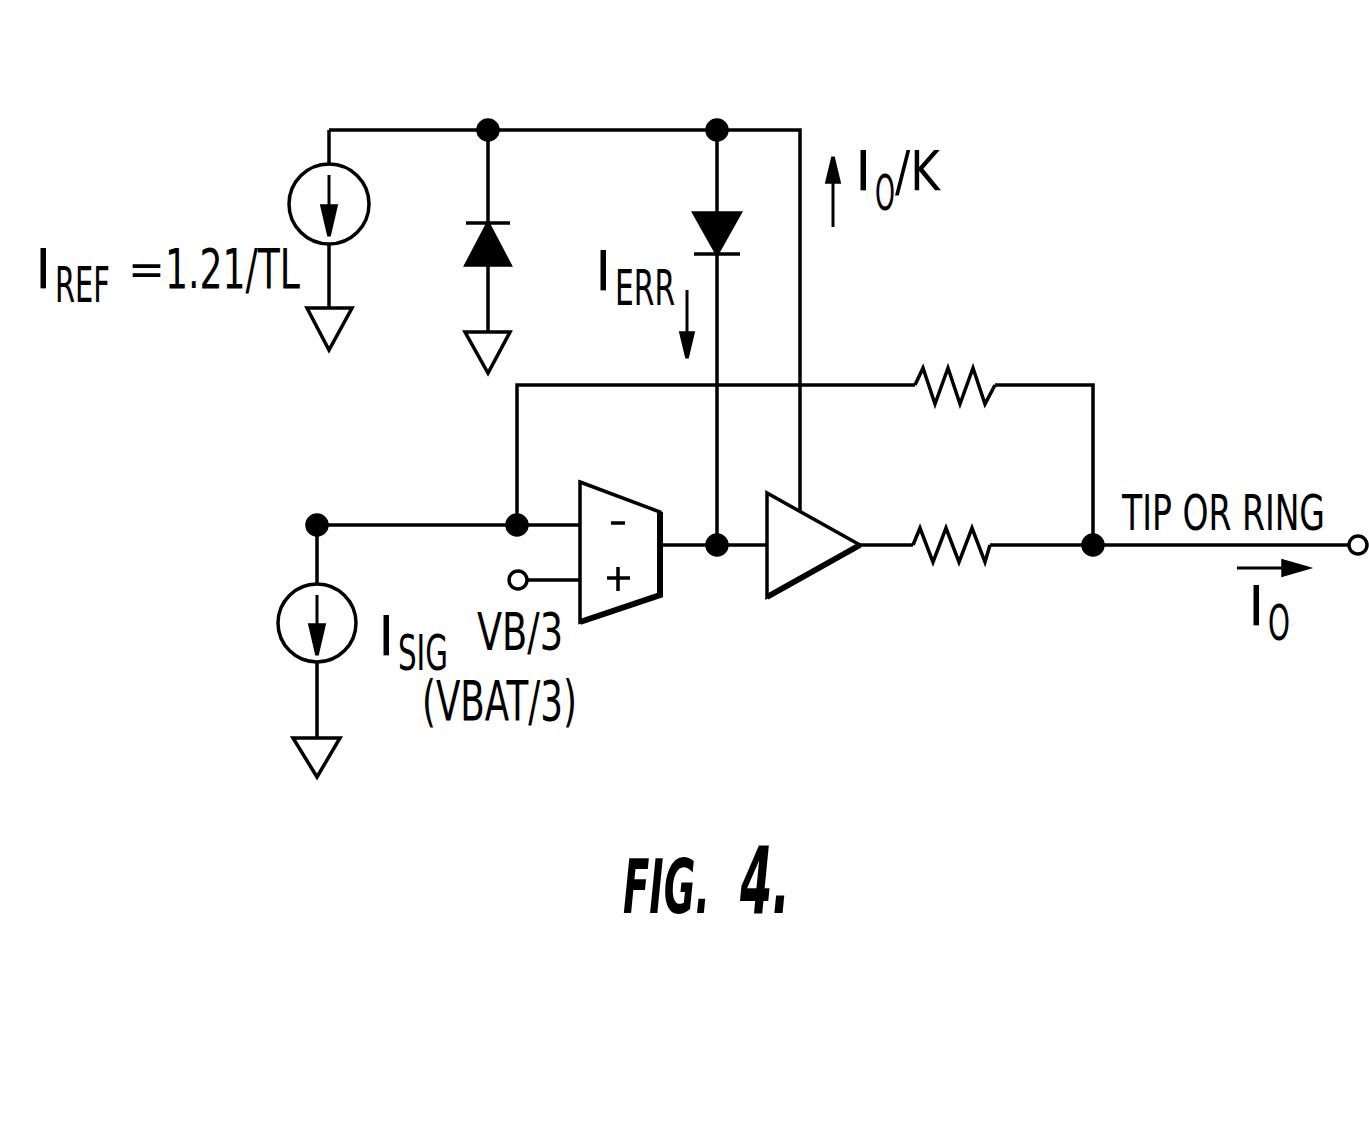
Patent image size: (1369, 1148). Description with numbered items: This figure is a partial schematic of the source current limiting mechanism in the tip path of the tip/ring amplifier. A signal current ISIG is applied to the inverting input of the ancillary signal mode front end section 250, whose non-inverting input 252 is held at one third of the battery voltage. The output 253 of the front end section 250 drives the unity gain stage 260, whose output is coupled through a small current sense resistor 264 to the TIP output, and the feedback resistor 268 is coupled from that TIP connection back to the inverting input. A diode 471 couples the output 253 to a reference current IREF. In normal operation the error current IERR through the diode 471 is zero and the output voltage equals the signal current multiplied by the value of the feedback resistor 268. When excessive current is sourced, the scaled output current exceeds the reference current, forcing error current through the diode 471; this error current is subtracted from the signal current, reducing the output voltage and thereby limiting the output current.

The ancillary signal mode front end section 250 is at (620, 497).
The non-inverting input 252 is at (508, 572).
The output 253 is at (718, 553).
The unity gain stage 260 is at (810, 583).
The current sense resistor 264 is at (970, 528).
The ancillary path feedback resistor 268 is at (947, 370).
The diode 471 is at (700, 212).